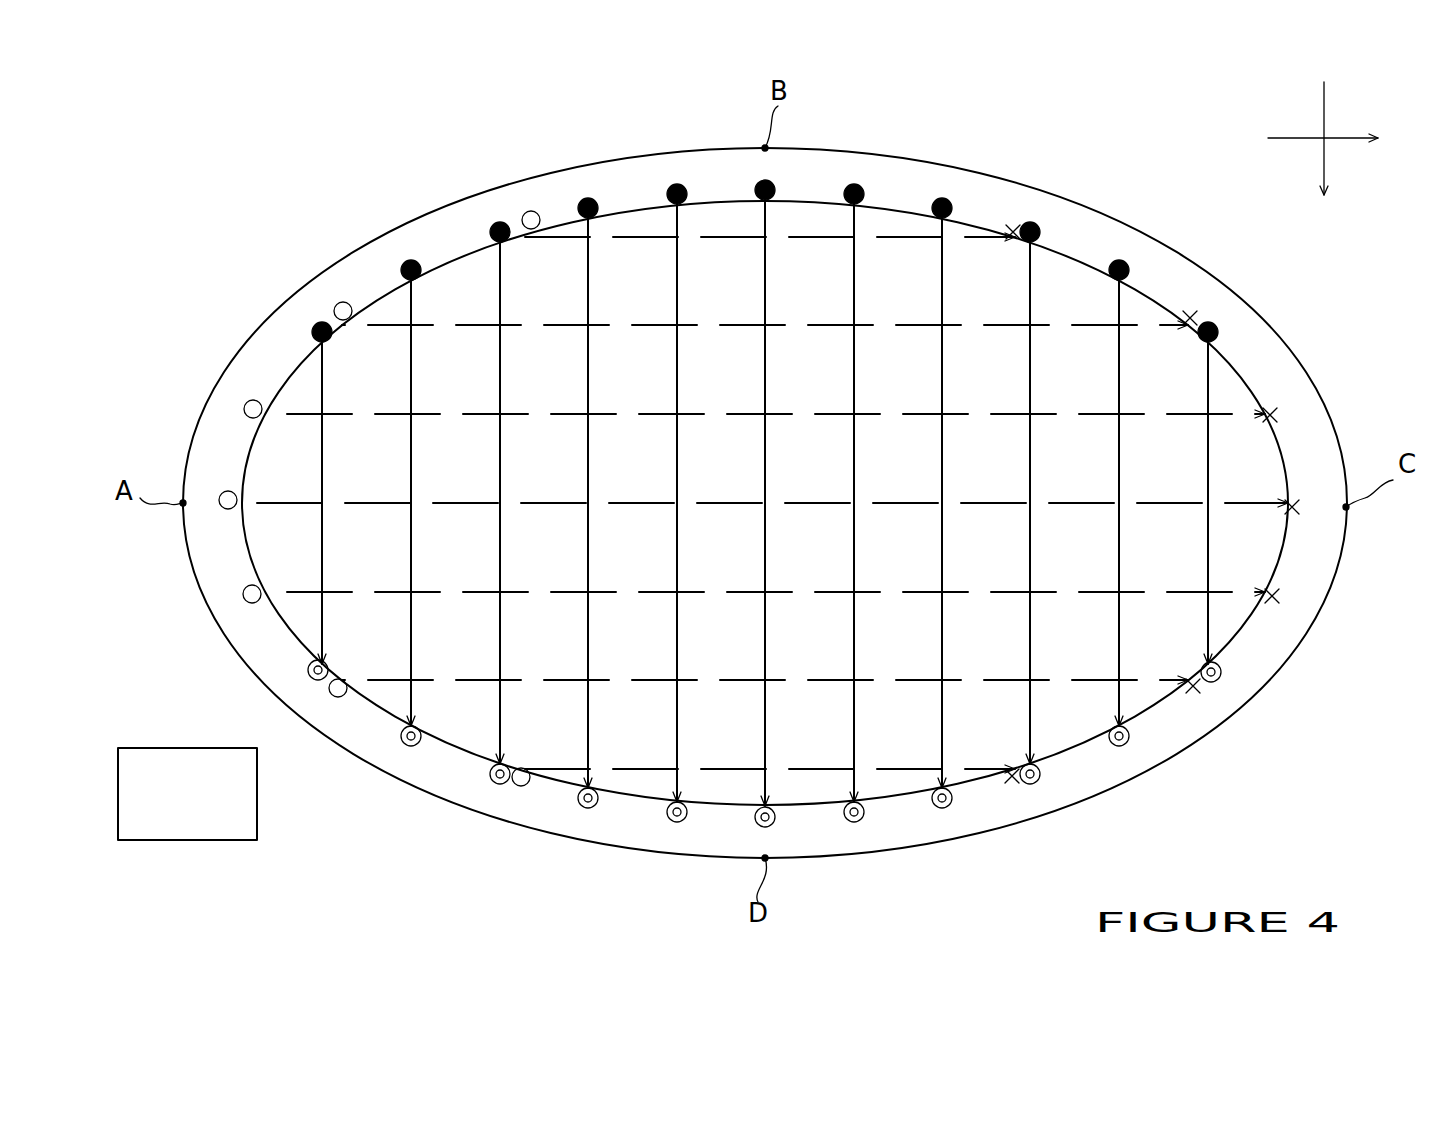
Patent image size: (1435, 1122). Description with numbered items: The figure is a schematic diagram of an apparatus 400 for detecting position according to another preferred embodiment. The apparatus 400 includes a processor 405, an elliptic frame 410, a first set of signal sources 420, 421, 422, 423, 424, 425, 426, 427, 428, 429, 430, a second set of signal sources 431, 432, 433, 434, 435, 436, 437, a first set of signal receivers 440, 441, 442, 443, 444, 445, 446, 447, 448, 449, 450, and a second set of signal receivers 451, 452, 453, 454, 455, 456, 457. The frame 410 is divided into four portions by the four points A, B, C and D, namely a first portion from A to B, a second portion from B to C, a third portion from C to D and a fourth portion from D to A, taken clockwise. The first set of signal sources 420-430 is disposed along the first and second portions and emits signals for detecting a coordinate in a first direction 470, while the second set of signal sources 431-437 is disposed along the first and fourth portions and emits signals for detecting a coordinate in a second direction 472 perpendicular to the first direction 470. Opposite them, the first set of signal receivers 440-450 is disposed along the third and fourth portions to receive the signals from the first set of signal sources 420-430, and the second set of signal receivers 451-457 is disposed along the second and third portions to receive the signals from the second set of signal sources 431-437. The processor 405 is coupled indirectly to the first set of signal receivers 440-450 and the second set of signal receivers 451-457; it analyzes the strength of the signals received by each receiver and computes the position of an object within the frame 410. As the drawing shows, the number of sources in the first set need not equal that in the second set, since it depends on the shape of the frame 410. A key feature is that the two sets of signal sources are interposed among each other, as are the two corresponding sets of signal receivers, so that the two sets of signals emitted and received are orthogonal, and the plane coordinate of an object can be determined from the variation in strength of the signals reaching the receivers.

The apparatus for detecting position 400 is at (312, 917).
The processor 405 is at (164, 841).
The elliptic frame 410 is at (1105, 245).
The signal source of first set 420 is at (312, 326).
The signal source of first set 421 is at (411, 260).
The signal source of first set 422 is at (500, 222).
The signal source of first set 423 is at (588, 198).
The signal source of first set 424 is at (677, 184).
The signal source of first set 425 is at (772, 182).
The signal source of first set 426 is at (858, 185).
The signal source of first set 427 is at (946, 200).
The signal source of first set 428 is at (1036, 226).
The signal source of first set 429 is at (1124, 262).
The signal source of first set 430 is at (1215, 326).
The signal source of second set 431 is at (531, 211).
The signal source of second set 432 is at (343, 302).
The signal source of second set 433 is at (248, 405).
The signal source of second set 434 is at (220, 497).
The signal source of second set 435 is at (243, 594).
The signal source of second set 436 is at (330, 694).
The signal source of second set 437 is at (516, 786).
The signal receiver of first set 440 is at (308, 670).
The signal receiver of first set 441 is at (402, 742).
The signal receiver of first set 442 is at (492, 778).
The signal receiver of first set 443 is at (586, 808).
The signal receiver of first set 444 is at (673, 822).
The signal receiver of first set 445 is at (770, 827).
The signal receiver of first set 446 is at (856, 822).
The signal receiver of first set 447 is at (944, 808).
The signal receiver of first set 448 is at (1038, 782).
The signal receiver of first set 449 is at (1125, 745).
The signal receiver of first set 450 is at (1222, 672).
The signal receiver of second set 451 is at (1018, 225).
The signal receiver of second set 452 is at (1192, 312).
The signal receiver of second set 453 is at (1275, 412).
The signal receiver of second set 454 is at (1296, 505).
The signal receiver of second set 455 is at (1280, 598).
The signal receiver of second set 456 is at (1198, 692).
The signal receiver of second set 457 is at (1012, 784).
The first direction 470 is at (1351, 141).
The second direction 472 is at (1325, 152).